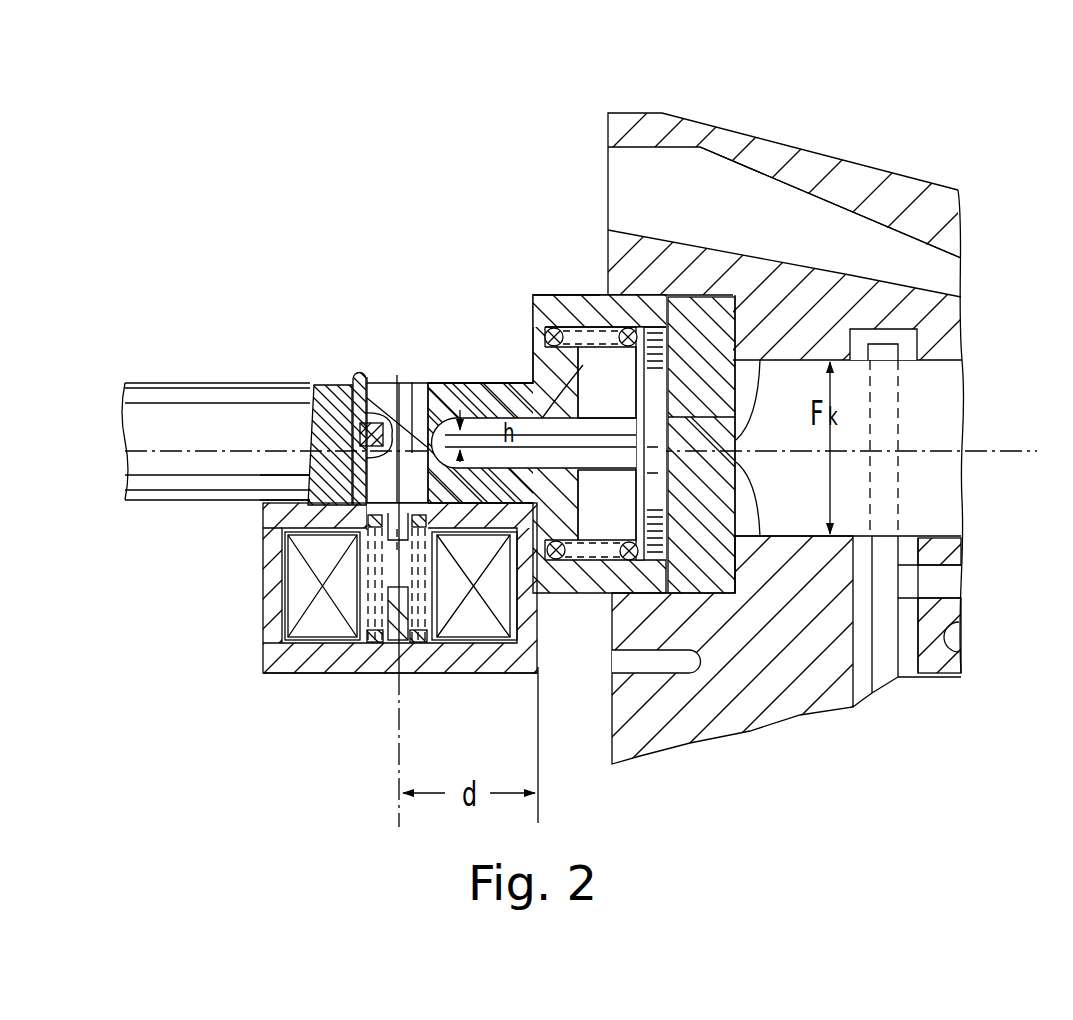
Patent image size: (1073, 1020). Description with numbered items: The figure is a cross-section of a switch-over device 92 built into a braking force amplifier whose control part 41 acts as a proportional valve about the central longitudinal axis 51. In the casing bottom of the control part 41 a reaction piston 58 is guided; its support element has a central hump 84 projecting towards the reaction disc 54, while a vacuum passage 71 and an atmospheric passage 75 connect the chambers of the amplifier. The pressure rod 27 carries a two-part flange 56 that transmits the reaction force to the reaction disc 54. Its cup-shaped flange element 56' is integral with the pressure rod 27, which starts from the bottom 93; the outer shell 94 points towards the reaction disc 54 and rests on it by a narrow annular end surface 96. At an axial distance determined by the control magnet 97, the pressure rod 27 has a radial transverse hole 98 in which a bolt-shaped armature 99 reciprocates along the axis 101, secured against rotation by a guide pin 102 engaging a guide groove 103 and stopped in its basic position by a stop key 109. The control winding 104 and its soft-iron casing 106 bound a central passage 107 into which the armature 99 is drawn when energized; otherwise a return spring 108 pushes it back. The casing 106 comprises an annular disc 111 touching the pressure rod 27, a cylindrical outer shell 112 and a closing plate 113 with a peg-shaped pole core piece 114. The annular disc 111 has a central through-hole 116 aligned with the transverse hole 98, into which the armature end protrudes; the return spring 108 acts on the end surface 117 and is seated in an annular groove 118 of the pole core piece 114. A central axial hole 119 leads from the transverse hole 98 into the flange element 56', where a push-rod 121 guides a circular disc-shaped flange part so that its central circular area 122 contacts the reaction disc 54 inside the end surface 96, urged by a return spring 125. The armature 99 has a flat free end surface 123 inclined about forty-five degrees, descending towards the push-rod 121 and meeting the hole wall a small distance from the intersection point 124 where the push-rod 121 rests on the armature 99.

The pressure rod 27 is at (178, 412).
The control part 41 is at (916, 176).
The central longitudinal axis 51 is at (996, 451).
The reaction disc 54 is at (773, 295).
The flange 56 is at (547, 378).
The cup-shaped flange element 56' is at (566, 258).
The reaction piston 58 is at (940, 383).
The vacuum passage 71 is at (812, 230).
The atmospheric passage 75 is at (926, 585).
The central hump 84 is at (742, 458).
The switch-over device 92 is at (440, 209).
The bottom 93 is at (555, 745).
The outer shell 94 is at (598, 304).
The annular end surface 96 is at (654, 585).
The control magnet 97 is at (259, 675).
The radial transverse hole 98 is at (430, 395).
The armature 99 is at (418, 437).
The central longitudinal axis of the transverse hole 101 is at (399, 813).
The guide pin 102 is at (380, 420).
The guide groove 103 is at (330, 440).
The control winding 104 is at (303, 605).
The casing 106 is at (281, 670).
The central passage 107 is at (388, 568).
The return spring 108 is at (383, 608).
The stop key 109 is at (361, 375).
The annular disc 111 is at (365, 508).
The cylindrical outer shell 112 is at (272, 548).
The closing plate 113 is at (315, 663).
The pole core piece 114 is at (380, 650).
The central through-hole 116 is at (310, 498).
The end surface 117 is at (395, 465).
The annular groove 118 is at (417, 650).
The central axial hole 119 is at (499, 433).
The push-rod 121 is at (579, 385).
The central circular area 122 is at (737, 414).
The flat free end surface 123 is at (403, 440).
The intersection point 124 is at (579, 492).
The return spring 125 is at (552, 565).